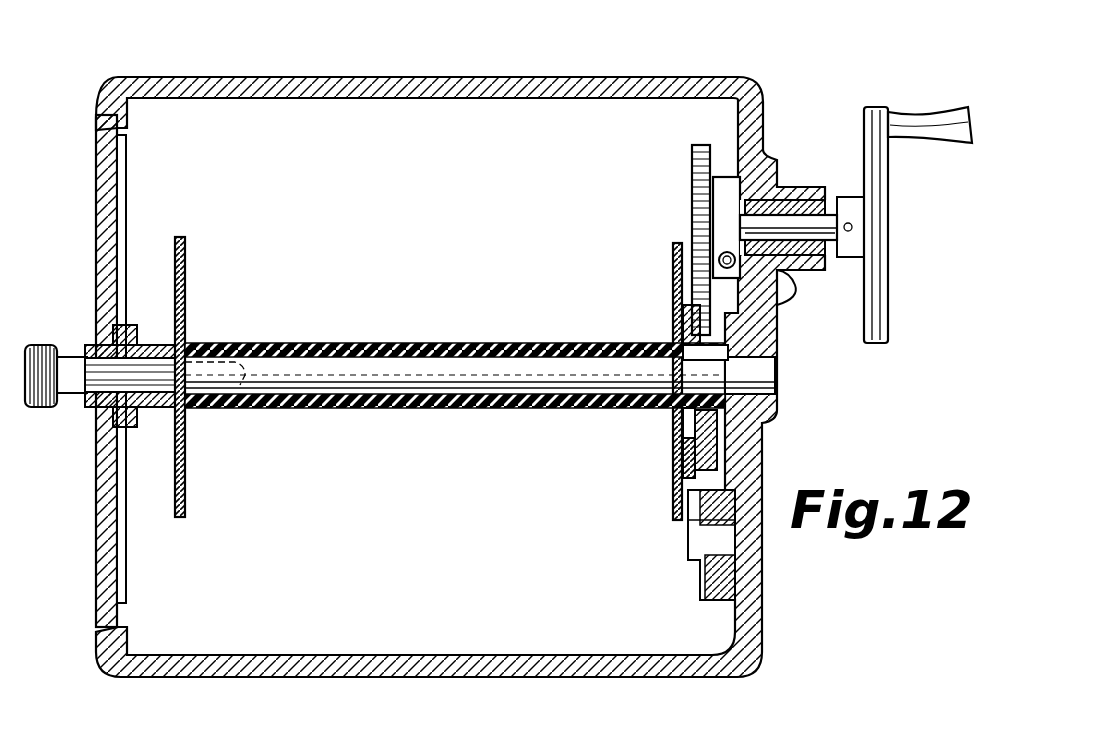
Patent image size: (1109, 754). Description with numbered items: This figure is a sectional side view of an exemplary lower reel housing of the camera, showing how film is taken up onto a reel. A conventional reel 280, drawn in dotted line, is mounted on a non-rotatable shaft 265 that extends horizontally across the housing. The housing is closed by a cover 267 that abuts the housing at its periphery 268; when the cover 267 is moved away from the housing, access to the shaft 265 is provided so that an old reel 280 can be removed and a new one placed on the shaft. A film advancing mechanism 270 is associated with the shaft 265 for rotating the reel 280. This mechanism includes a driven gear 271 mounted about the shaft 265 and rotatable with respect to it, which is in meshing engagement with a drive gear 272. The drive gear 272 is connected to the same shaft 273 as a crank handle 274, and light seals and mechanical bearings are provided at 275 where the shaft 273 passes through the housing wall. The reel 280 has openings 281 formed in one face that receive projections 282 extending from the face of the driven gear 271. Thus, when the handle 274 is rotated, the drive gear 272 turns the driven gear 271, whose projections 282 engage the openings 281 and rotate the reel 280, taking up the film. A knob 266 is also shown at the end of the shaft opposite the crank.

The non-rotatable shaft 265 is at (462, 333).
The knob 266 is at (46, 342).
The cover 267 is at (113, 202).
The periphery 268 is at (118, 78).
The film advancing mechanism 270 is at (903, 345).
The driven gear 271 is at (674, 322).
The drive gear 272 is at (692, 178).
The shaft 273 is at (783, 222).
The crank handle 274 is at (929, 118).
The light seals and mechanical bearings 275 is at (799, 282).
The reel 280 is at (184, 289).
The openings 281 is at (676, 425).
The projections 282 is at (672, 447).